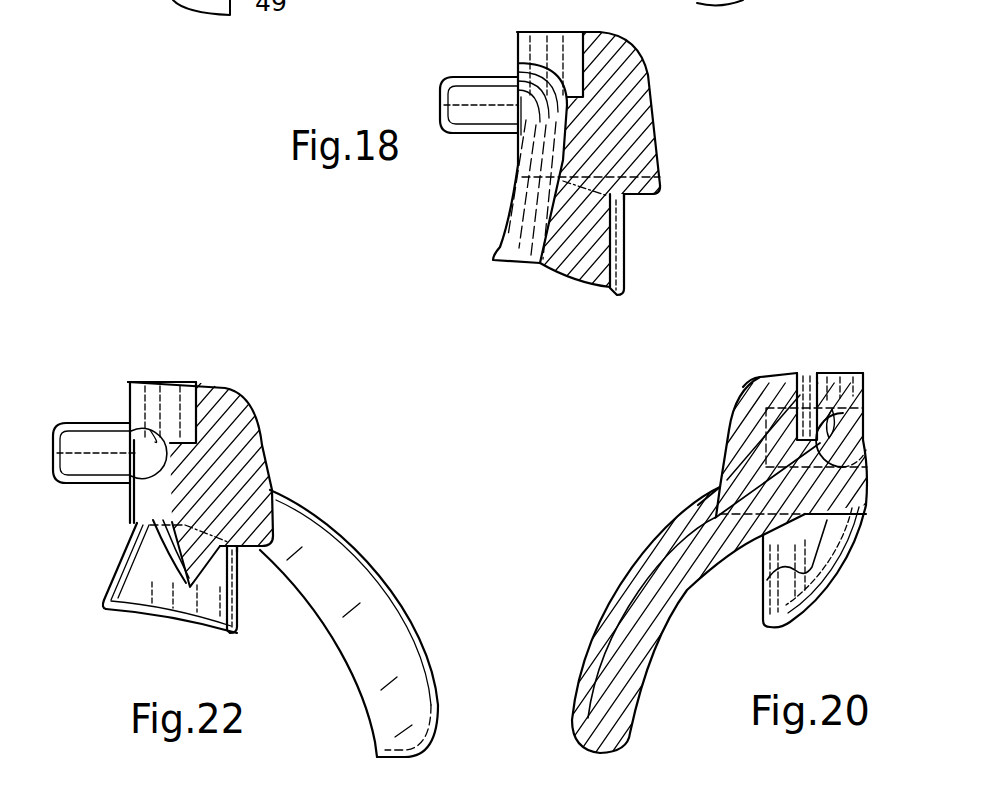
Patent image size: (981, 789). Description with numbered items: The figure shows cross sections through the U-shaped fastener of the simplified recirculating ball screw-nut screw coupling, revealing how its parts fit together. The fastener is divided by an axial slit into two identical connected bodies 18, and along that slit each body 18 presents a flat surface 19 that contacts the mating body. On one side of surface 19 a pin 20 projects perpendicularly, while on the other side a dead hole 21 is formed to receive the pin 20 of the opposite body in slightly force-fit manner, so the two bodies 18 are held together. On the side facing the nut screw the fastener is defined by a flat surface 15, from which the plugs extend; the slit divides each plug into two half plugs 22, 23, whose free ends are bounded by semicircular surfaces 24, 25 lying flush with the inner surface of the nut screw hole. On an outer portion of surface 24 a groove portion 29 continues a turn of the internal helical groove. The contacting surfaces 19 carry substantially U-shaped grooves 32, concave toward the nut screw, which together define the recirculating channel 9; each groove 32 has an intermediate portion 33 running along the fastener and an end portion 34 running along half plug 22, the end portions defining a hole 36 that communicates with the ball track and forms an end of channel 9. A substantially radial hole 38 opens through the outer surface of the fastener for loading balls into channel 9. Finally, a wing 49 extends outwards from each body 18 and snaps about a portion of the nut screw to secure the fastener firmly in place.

In FIG. 22, the recirculating channel 9 is at (146, 468).
In FIG. 20, the recirculating channel 9 is at (852, 430).
In FIG. 18, the flat surface 15 is at (632, 200).
In FIG. 22, the flat surface 15 is at (256, 551).
In FIG. 20, the flat surface 15 is at (700, 502).
In FIG. 18, the body 18 is at (647, 92).
In FIG. 22, the body 18 is at (243, 390).
In FIG. 20, the body 18 is at (738, 403).
In FIG. 18, the flat surface 19 is at (512, 66).
In FIG. 22, the flat surface 19 is at (124, 400).
In FIG. 18, the pin 20 is at (473, 90).
In FIG. 22, the pin 20 is at (84, 450).
In FIG. 20, the dead hole 21 is at (763, 393).
In FIG. 20, the half plug 22 is at (759, 566).
In FIG. 18, the half plug 23 is at (622, 248).
In FIG. 22, the half plug 23 is at (241, 590).
In FIG. 20, the semicircular surface 24 is at (788, 597).
In FIG. 18, the semicircular surface 25 is at (571, 272).
In FIG. 22, the semicircular surface 25 is at (163, 620).
In FIG. 22, the groove portion 29 is at (189, 576).
In FIG. 20, the groove portion 29 is at (812, 572).
In FIG. 22, the U-shaped groove 32 is at (141, 408).
In FIG. 20, the U-shaped groove 32 is at (840, 372).
In FIG. 22, the intermediate portion 33 is at (154, 440).
In FIG. 20, the intermediate portion 33 is at (832, 447).
In FIG. 22, the end portion 34 is at (136, 538).
In FIG. 18, the hole 36 is at (537, 203).
In FIG. 18, the radial hole 38 is at (578, 72).
In FIG. 22, the radial hole 38 is at (190, 418).
In FIG. 20, the radial hole 38 is at (810, 372).
In FIG. 22, the wing 49 is at (392, 688).
In FIG. 20, the wing 49 is at (590, 697).